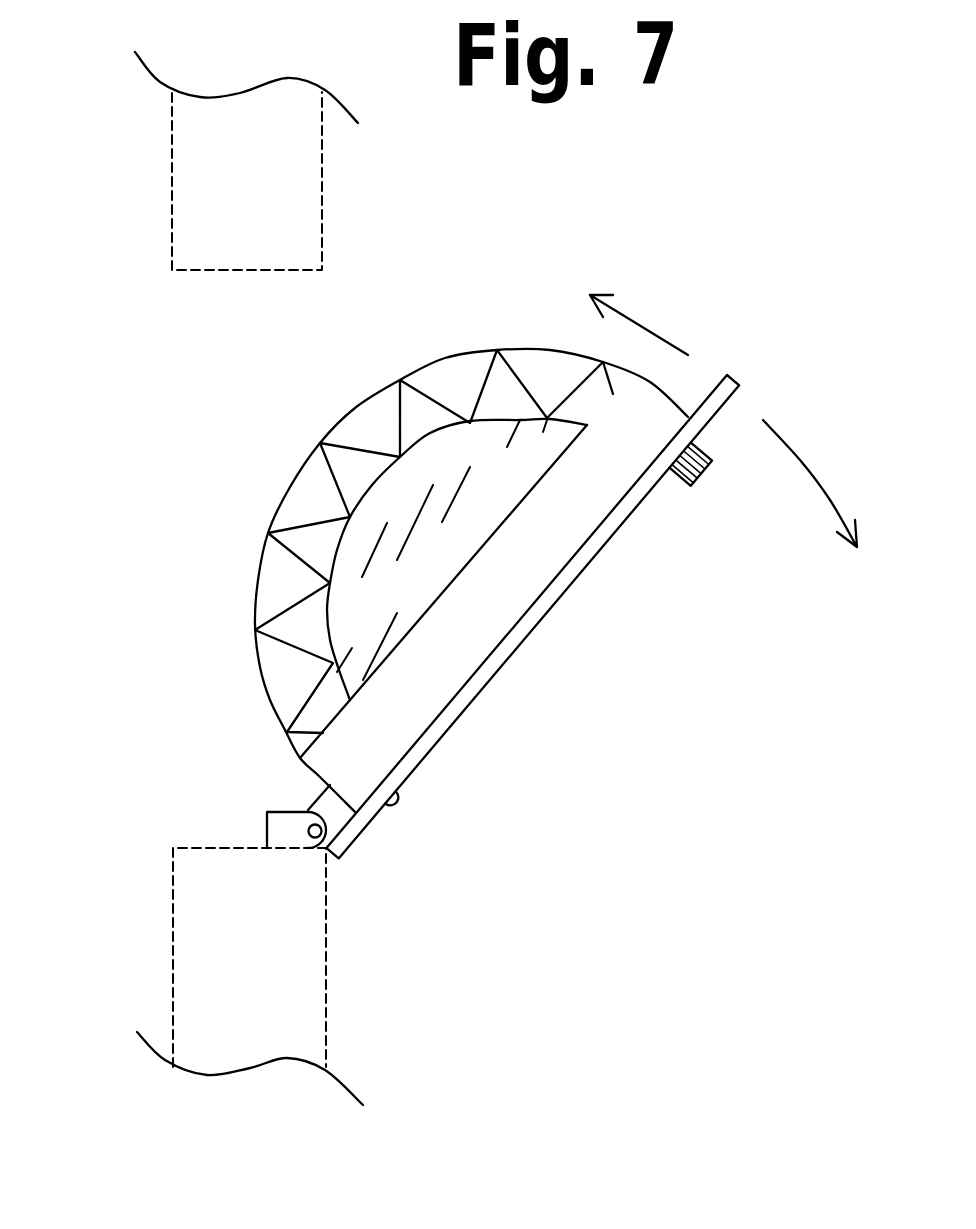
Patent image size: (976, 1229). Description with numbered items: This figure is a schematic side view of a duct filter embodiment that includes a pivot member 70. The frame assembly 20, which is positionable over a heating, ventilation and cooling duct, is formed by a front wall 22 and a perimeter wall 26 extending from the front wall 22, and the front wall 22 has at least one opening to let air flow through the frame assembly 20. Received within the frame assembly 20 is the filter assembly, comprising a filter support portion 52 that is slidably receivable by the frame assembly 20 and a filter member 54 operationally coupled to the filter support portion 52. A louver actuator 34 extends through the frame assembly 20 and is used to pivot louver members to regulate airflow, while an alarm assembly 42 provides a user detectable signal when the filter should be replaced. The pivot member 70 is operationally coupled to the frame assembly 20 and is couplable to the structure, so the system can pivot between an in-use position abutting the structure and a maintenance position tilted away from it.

The frame assembly 20 is at (740, 378).
The front wall 22 is at (565, 657).
The perimeter wall 26 is at (567, 490).
The louver actuator 34 is at (703, 475).
The alarm assembly 42 is at (403, 803).
The filter support portion 52 is at (373, 593).
The filter member 54 is at (373, 427).
The pivot member 70 is at (308, 810).